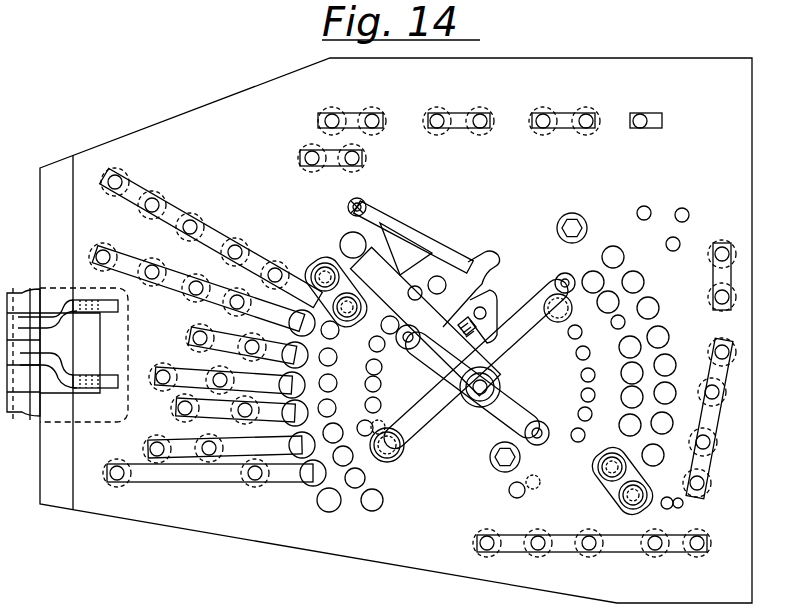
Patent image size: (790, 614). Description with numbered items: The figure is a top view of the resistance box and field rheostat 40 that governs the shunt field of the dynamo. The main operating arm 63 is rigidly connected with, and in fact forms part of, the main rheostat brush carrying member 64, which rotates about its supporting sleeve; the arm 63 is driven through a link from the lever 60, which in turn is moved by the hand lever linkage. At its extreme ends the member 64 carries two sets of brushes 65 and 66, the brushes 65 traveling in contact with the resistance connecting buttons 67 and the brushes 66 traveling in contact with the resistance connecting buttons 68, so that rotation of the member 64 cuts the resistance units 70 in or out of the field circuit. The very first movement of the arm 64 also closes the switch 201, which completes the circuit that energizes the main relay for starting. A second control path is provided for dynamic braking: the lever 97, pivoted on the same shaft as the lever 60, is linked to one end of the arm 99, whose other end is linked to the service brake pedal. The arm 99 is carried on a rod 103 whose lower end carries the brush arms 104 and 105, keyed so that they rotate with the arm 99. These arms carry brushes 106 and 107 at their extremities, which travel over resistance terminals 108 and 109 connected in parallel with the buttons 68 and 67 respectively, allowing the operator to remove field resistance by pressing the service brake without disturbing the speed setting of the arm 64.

The field rheostat 40 is at (368, 527).
The lever 60 is at (72, 390).
The main operating arm 63 is at (525, 318).
The brush carrying member 64 is at (530, 462).
The brushes 65 is at (313, 262).
The brushes 66 is at (648, 490).
The resistance connecting buttons 67 is at (300, 385).
The resistance connecting buttons 68 is at (630, 346).
The resistance units 70 is at (120, 172).
The lever 97 is at (72, 300).
The arm 99 is at (442, 367).
The rod 103 is at (490, 388).
The brush arm 104 is at (546, 338).
The brush arm 105 is at (455, 412).
The brush 106 is at (570, 311).
The brush 107 is at (396, 463).
The resistance terminals 108 is at (592, 378).
The resistance terminals 109 is at (368, 391).
The switch 201 is at (410, 228).